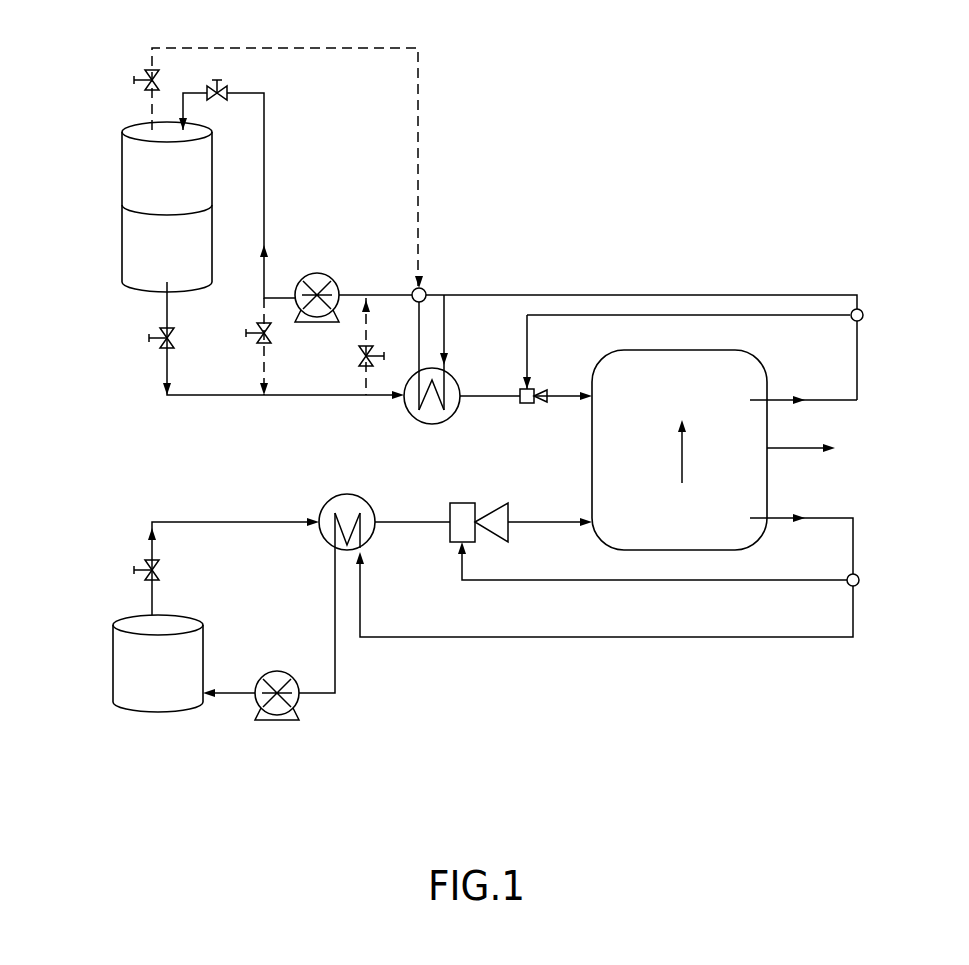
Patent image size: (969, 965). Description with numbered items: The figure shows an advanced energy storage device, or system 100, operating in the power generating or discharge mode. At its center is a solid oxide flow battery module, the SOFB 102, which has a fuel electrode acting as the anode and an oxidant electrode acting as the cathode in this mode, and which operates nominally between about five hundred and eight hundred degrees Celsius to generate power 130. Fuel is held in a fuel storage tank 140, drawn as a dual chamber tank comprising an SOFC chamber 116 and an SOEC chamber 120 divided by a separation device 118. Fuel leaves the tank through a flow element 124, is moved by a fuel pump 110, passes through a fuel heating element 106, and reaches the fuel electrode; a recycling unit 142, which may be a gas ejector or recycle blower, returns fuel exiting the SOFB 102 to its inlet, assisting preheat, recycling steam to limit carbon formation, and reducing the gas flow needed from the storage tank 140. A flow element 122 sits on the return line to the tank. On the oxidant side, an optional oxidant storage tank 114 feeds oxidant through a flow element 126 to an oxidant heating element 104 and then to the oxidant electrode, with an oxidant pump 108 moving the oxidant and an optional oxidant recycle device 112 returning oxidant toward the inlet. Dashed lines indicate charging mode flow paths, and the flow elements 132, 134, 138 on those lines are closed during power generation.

The system 100 is at (684, 86).
The solid oxide flow battery module 102 is at (768, 495).
The oxidant heating element 104 is at (355, 499).
The fuel heating element 106 is at (410, 418).
The oxidant pump 108 is at (288, 674).
The fuel pump 110 is at (328, 276).
The oxidant recycle device 112 is at (470, 503).
The oxidant storage tank 114 is at (140, 712).
The SOFC chamber 116 is at (122, 235).
The separation device 118 is at (212, 208).
The SOEC chamber 120 is at (122, 173).
The flow element 122 is at (226, 95).
The flow element 124 is at (160, 336).
The flow element 126 is at (145, 568).
The power 130 is at (867, 460).
The flow element 132 is at (145, 79).
The flow element 134 is at (258, 328).
The flow element 138 is at (358, 353).
The fuel storage tank 140 is at (86, 120).
The recycling unit 142 is at (530, 404).